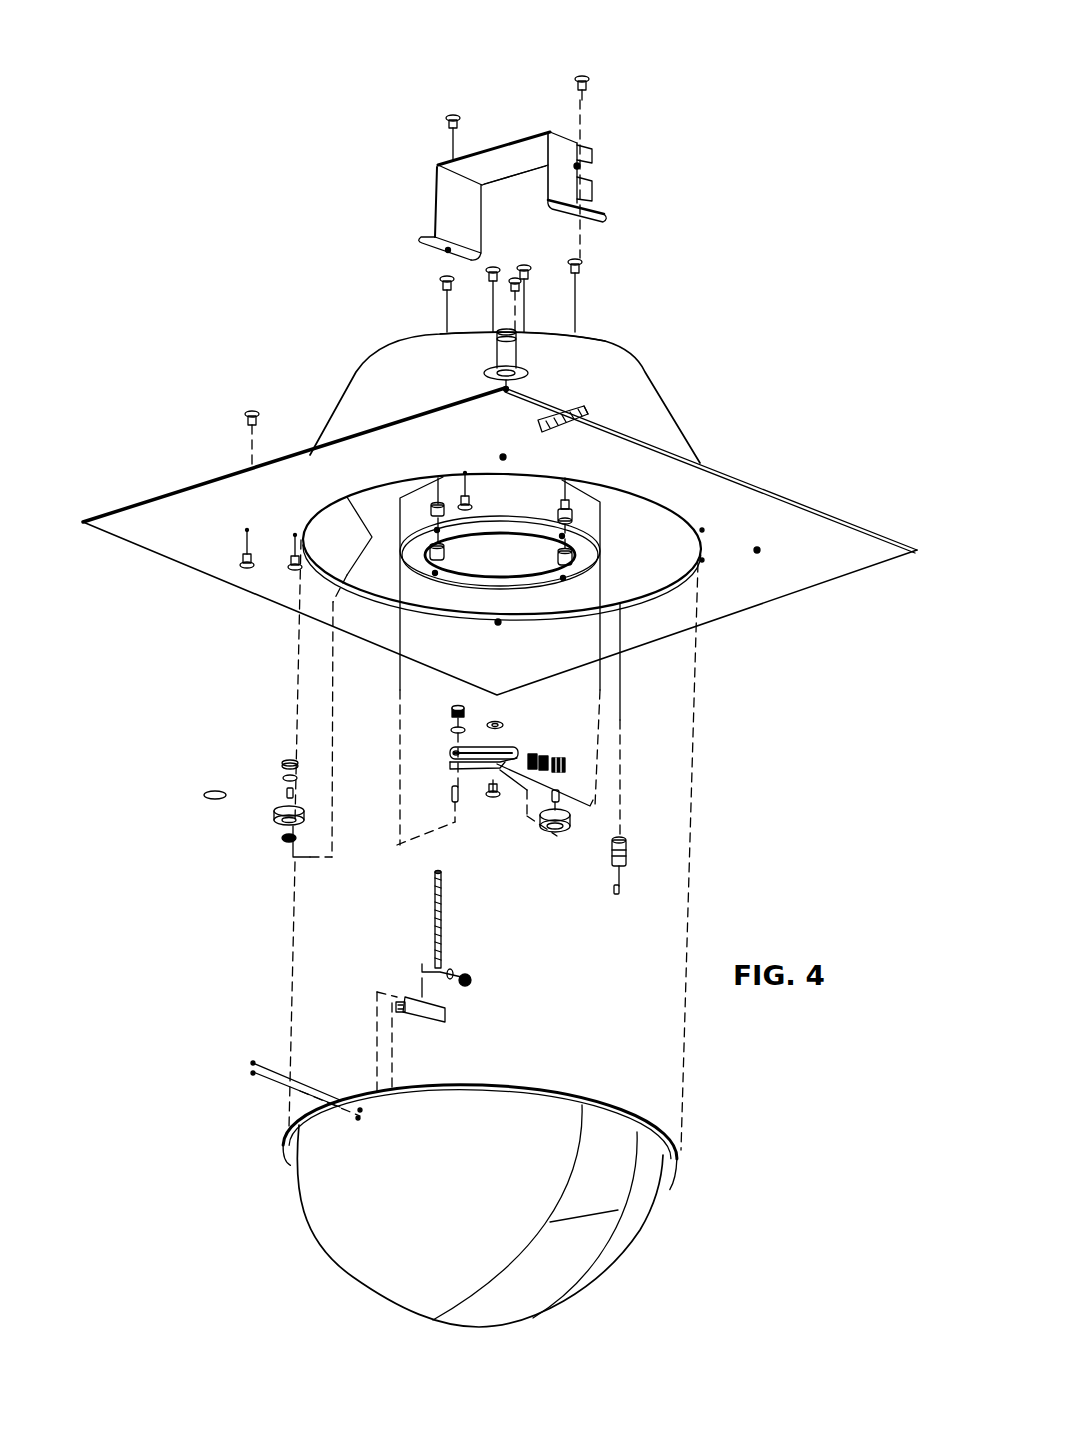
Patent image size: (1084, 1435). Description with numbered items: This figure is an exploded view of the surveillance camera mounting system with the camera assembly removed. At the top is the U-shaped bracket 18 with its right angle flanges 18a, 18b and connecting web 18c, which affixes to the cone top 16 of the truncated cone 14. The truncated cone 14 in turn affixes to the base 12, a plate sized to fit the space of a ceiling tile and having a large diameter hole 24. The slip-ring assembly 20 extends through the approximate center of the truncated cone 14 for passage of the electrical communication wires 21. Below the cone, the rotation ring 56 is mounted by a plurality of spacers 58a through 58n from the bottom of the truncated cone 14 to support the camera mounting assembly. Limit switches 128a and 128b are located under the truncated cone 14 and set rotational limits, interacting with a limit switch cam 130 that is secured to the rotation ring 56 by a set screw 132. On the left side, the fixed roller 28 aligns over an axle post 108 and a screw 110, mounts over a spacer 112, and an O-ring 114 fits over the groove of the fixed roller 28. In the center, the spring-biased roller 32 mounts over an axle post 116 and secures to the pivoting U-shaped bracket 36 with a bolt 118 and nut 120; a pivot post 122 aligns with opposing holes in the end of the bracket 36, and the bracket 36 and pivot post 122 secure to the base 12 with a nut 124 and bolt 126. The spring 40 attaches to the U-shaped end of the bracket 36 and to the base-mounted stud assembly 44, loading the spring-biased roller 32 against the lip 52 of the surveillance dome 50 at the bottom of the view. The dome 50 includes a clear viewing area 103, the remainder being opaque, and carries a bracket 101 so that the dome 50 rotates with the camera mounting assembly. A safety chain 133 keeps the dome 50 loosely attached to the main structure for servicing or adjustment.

The base 12 is at (828, 526).
The truncated cone 14 is at (660, 397).
The cone top 16 is at (398, 346).
The U-shaped bracket 18 is at (435, 190).
The right angle flange 18a is at (420, 248).
The right angle flange 18b is at (607, 220).
The bracket web 18c is at (489, 122).
The slip-ring assembly 20 is at (527, 371).
The electrical communication wires 21 is at (506, 393).
The large diameter hole 24 is at (671, 516).
The fixed roller 28 is at (276, 822).
The spring-biased roller 32 is at (556, 834).
The modified pivoting U-shaped bracket 36 is at (506, 750).
The spring 40 is at (541, 757).
The stud assembly 44 is at (567, 758).
The surveillance dome 50 is at (300, 1205).
The lip 52 is at (664, 1126).
The rotation ring 56 is at (598, 556).
The spacer 58a is at (430, 509).
The spacer 58n is at (572, 557).
The bracket 101 is at (447, 1018).
The clear viewing area 103 is at (577, 1265).
The axle post 108 is at (285, 790).
The screw 110 is at (298, 571).
The spacer 112 is at (283, 843).
The O-ring 114 is at (210, 793).
The axle post 116 is at (561, 800).
The bolt 118 is at (493, 800).
The nut 120 is at (495, 720).
The pivot post 122 is at (452, 795).
The nut 124 is at (457, 708).
The bolt 126 is at (473, 506).
The limit switch 128a is at (556, 402).
The limit switch 128b is at (588, 417).
The limit switch cam 130 is at (624, 846).
The set screw 132 is at (620, 889).
The safety chain 133 is at (443, 910).